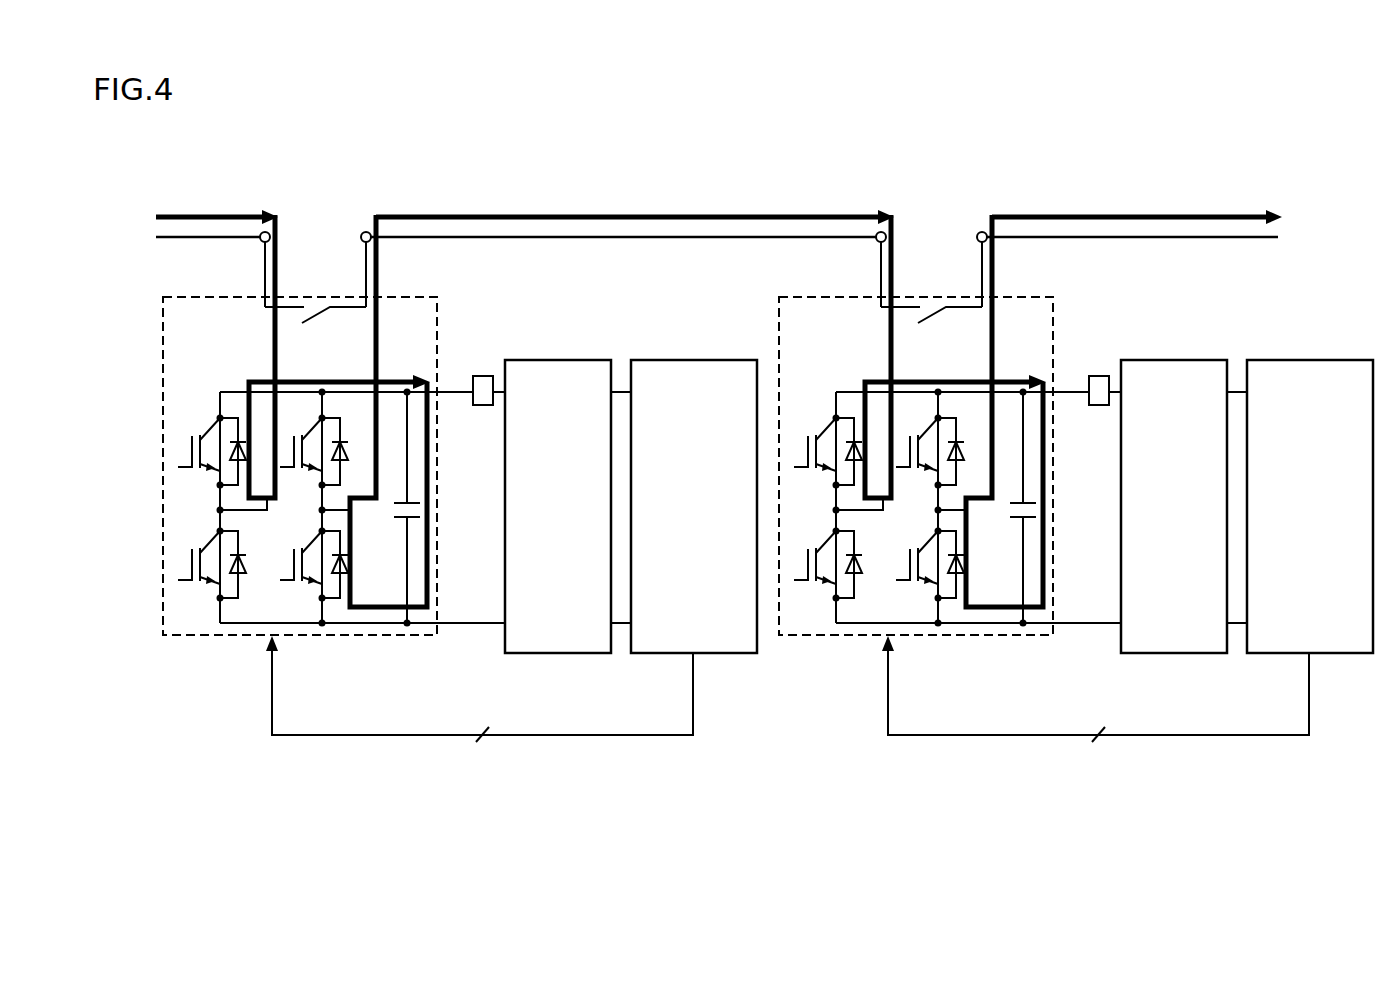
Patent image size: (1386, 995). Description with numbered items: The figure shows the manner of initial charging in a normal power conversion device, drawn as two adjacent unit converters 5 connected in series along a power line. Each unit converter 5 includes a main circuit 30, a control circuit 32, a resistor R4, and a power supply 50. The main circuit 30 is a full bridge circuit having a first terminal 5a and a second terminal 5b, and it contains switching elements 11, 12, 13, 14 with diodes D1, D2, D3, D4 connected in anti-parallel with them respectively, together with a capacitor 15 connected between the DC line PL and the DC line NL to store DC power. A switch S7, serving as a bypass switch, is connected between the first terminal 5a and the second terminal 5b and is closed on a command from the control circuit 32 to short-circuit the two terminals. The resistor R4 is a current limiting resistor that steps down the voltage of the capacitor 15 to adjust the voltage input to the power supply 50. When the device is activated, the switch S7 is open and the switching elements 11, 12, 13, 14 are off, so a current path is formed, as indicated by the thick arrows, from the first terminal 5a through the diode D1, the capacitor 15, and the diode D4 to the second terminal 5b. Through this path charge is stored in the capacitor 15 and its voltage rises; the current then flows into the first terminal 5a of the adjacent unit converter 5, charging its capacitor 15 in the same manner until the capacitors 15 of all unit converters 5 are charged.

The unit converter 5 is at (136, 195).
The first terminal 5a is at (260, 242).
The second terminal 5b is at (361, 238).
The switch S7 is at (322, 306).
The main circuit 30 is at (176, 296).
The switching element 11 is at (190, 447).
The switching element 12 is at (293, 447).
The switching element 13 is at (190, 562).
The switching element 14 is at (293, 562).
The diode D1 is at (238, 432).
The diode D2 is at (340, 432).
The diode D3 is at (238, 602).
The diode D4 is at (340, 602).
The capacitor 15 is at (420, 504).
The DC line PL is at (456, 389).
The DC line NL is at (466, 626).
The resistor R4 is at (483, 375).
The power supply 50 is at (570, 360).
The control circuit 32 is at (716, 360).